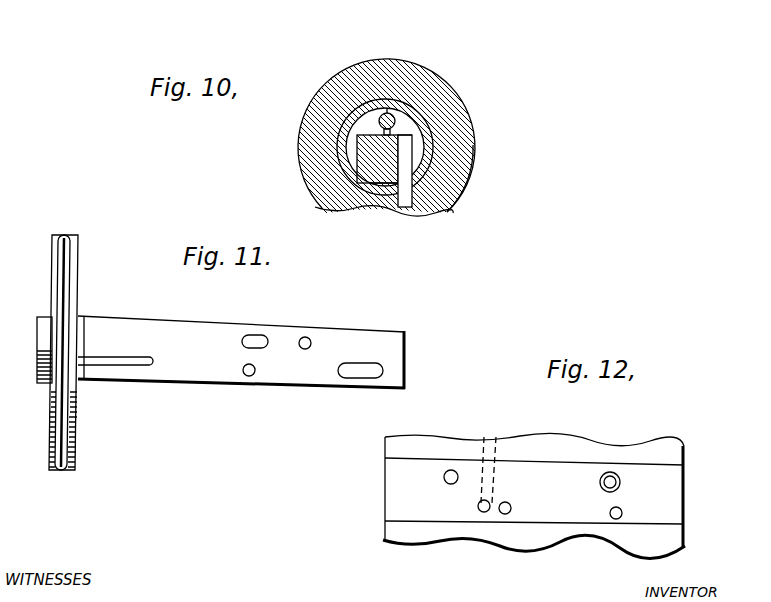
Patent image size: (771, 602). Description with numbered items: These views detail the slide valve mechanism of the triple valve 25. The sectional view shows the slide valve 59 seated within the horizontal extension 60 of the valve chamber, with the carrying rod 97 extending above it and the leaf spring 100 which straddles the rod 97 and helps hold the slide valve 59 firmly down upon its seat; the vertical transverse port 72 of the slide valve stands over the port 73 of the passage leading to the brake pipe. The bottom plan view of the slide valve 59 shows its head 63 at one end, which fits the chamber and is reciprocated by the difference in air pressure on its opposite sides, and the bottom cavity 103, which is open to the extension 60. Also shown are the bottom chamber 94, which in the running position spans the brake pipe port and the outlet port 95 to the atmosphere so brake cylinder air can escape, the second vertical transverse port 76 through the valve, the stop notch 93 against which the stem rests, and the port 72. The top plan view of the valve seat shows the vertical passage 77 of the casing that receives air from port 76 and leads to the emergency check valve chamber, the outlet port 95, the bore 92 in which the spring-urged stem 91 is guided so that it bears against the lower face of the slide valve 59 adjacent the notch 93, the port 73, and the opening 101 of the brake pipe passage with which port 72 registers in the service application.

In FIG. 10, the horizontal extension 60 is at (337, 90).
In FIG. 10, the leaf spring 100 is at (361, 124).
In FIG. 10, the carrying rod 97 is at (411, 108).
In FIG. 10, the vertical transverse port 72 is at (409, 136).
In FIG. 11, the vertical transverse port 72 is at (309, 338).
In FIG. 10, the triple valve 25 is at (460, 128).
In FIG. 10, the slide valve 59 is at (377, 151).
In FIG. 10, the port 73 is at (397, 202).
In FIG. 12, the port 73 is at (506, 514).
In FIG. 11, the head 63 is at (74, 279).
In FIG. 11, the bottom cavity 103 is at (141, 368).
In FIG. 11, the bottom chamber 94 is at (252, 333).
In FIG. 11, the vertical transverse port 76 is at (253, 374).
In FIG. 11, the stop notch 93 is at (355, 378).
In FIG. 12, the vertical passage 77 is at (444, 477).
In FIG. 12, the outlet port 95 is at (483, 512).
In FIG. 12, the bore 92 is at (609, 474).
In FIG. 12, the stem 91 is at (618, 474).
In FIG. 12, the opening 101 is at (623, 512).